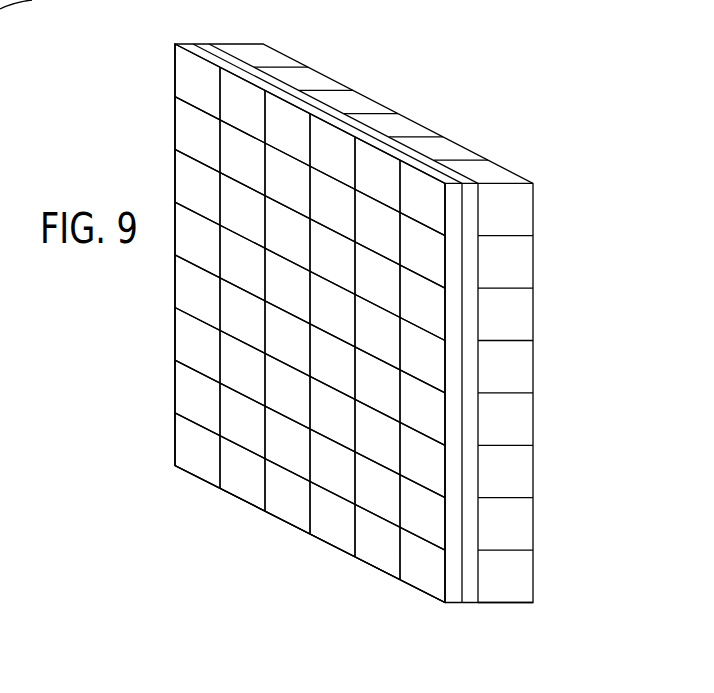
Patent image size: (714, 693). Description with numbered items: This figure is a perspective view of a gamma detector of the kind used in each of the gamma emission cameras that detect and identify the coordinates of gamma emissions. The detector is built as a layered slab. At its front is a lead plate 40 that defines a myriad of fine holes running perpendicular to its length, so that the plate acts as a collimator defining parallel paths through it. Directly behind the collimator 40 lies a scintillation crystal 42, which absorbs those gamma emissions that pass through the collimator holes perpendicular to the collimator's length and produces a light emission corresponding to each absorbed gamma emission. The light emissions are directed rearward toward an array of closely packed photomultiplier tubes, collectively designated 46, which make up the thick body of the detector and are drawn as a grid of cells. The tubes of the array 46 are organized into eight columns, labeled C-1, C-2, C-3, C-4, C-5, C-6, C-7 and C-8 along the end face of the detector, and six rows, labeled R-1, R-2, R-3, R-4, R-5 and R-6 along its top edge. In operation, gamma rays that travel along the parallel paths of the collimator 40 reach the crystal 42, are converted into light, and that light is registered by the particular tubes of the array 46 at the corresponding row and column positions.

The row R-1 of PMT array R-1 is at (485, 172).
The row R-2 of PMT array R-2 is at (447, 150).
The row R-3 of PMT array R-3 is at (408, 125).
The row R-4 of PMT array R-4 is at (358, 103).
The row R-5 of PMT array R-5 is at (315, 82).
The row R-6 of PMT array R-6 is at (263, 55).
The column C-1 of PMT array C-1 is at (376, 140).
The column C-2 of PMT array C-2 is at (376, 192).
The column C-3 of PMT array C-3 is at (376, 244).
The column C-4 of PMT array C-4 is at (376, 297).
The column C-5 of PMT array C-5 is at (376, 350).
The column C-6 of PMT array C-6 is at (376, 403).
The column C-7 of PMT array C-7 is at (376, 455).
The column C-8 of PMT array C-8 is at (376, 508).
The lead plate 40 is at (448, 594).
The scintillation crystal 42 is at (465, 594).
The array of closely packed PMTs 46 is at (488, 578).